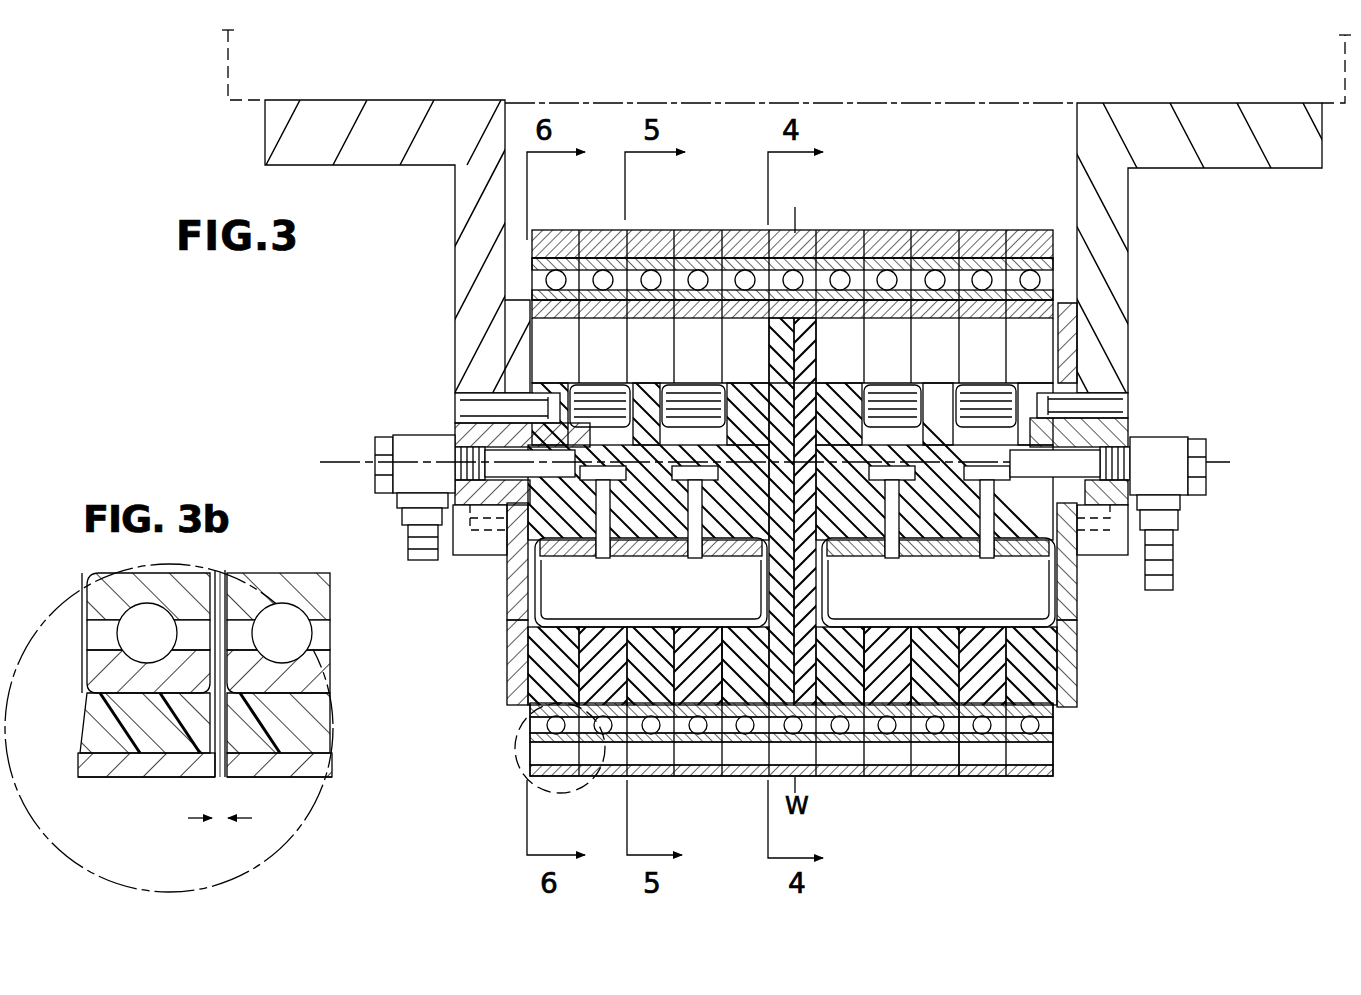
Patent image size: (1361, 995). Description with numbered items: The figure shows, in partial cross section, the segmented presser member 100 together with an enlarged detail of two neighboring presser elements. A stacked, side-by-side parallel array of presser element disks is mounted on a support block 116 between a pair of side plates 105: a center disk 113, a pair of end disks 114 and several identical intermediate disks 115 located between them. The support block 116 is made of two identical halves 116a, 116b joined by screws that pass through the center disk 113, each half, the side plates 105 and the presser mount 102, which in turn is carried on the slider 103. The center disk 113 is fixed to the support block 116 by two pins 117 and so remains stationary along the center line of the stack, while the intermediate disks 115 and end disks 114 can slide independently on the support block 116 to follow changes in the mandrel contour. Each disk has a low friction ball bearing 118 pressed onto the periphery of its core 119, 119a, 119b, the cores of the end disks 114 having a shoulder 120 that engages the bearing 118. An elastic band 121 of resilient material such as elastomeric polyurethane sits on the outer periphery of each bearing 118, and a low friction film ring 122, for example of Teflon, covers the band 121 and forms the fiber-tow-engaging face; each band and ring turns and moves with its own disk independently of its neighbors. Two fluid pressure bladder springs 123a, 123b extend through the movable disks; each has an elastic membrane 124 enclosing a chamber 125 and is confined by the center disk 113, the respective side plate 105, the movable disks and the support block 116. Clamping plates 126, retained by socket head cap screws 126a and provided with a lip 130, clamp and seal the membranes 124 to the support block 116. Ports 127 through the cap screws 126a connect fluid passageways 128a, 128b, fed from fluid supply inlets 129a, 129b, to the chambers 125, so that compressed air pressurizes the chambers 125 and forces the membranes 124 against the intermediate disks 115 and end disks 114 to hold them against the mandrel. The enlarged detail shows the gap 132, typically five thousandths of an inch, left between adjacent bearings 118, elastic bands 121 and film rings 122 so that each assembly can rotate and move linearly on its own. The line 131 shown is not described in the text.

In FIG. 3, the segmented presser member 100 is at (1190, 650).
In FIG. 3, the presser mount 102 is at (1077, 143).
In FIG. 3, the slider 103 is at (233, 100).
In FIG. 3, the side plate 105 is at (507, 636).
In FIG. 3, the center disk 113 is at (812, 781).
In FIG. 3, the end disk 114 is at (546, 780).
In FIG. 3b, the end disk 114 is at (124, 786).
In FIG. 3, the intermediate disk 115 is at (953, 780).
In FIG. 3b, the intermediate disk 115 is at (272, 786).
In FIG. 3, the support block 116 is at (1088, 553).
In FIG. 3, the support block half 116a is at (1128, 437).
In FIG. 3, the support block half 116b is at (461, 432).
In FIG. 3, the pin 117 is at (833, 445).
In FIG. 3, the ball bearing 118 is at (1055, 742).
In FIG. 3b, the ball bearing 118 is at (86, 672).
In FIG. 3, the core 119 is at (535, 668).
In FIG. 3, the core 119a is at (847, 776).
In FIG. 3, the core 119b is at (905, 776).
In FIG. 3, the shoulder 120 is at (530, 708).
In FIG. 3, the elastic band 121 is at (1057, 755).
In FIG. 3b, the elastic band 121 is at (90, 742).
In FIG. 3, the low friction film ring 122 is at (1045, 776).
In FIG. 3b, the low friction film ring 122 is at (90, 778).
In FIG. 3, the fluid pressure bladder spring 123a is at (520, 596).
In FIG. 3, the fluid pressure bladder spring 123b is at (1072, 607).
In FIG. 3, the elastic membrane 124 is at (541, 618).
In FIG. 3, the chamber 125 is at (697, 611).
In FIG. 3, the clamping plate 126 is at (546, 557).
In FIG. 3, the socket head cap screw 126a is at (668, 548).
In FIG. 3, the port 127 is at (556, 548).
In FIG. 3, the fluid passageway 128a is at (462, 432).
In FIG. 3, the fluid passageway 128b is at (1150, 457).
In FIG. 3, the fluid supply inlet 129a is at (406, 538).
In FIG. 3, the fluid supply inlet 129b is at (1176, 537).
In FIG. 3, the lip 130 is at (860, 548).
In FIG. 3, the bolt axis 131 is at (312, 462).
In FIG. 3b, the gap 132 is at (220, 822).